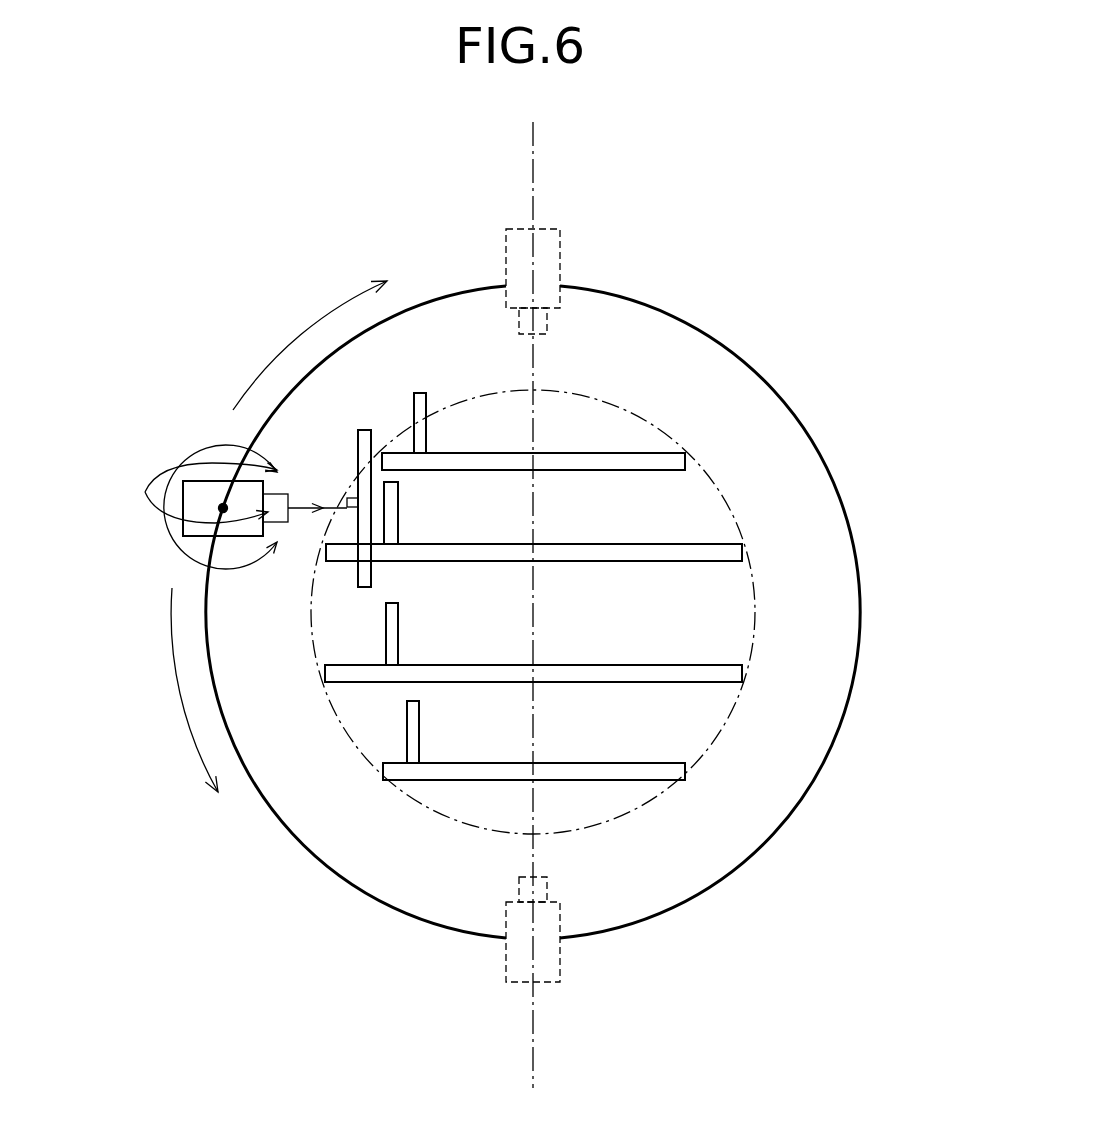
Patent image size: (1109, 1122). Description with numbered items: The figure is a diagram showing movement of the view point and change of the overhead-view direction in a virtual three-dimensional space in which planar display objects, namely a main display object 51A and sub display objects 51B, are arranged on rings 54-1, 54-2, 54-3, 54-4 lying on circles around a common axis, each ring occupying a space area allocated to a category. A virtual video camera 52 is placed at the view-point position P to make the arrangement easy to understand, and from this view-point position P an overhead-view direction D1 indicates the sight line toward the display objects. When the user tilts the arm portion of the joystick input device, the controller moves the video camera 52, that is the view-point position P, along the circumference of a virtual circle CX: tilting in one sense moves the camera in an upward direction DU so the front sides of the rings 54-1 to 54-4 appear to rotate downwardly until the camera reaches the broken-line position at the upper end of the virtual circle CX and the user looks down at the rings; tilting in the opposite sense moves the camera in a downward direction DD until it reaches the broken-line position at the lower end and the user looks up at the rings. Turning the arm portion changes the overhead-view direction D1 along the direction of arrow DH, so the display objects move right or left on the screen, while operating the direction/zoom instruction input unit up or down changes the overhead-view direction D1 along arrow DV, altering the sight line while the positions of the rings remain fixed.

The virtual circle CX is at (703, 330).
The virtual video camera 52 is at (563, 249).
The view-point position P is at (223, 508).
The overhead-view direction D1 is at (297, 513).
The arrow DV is at (208, 447).
The arrow DH is at (150, 480).
The upward direction DU is at (291, 342).
The downward direction DD is at (180, 705).
The main display object 51A is at (364, 430).
The sub display object 51B is at (420, 393).
The ring 54-1 is at (685, 462).
The ring 54-2 is at (742, 552).
The ring 54-3 is at (742, 672).
The ring 54-4 is at (685, 770).